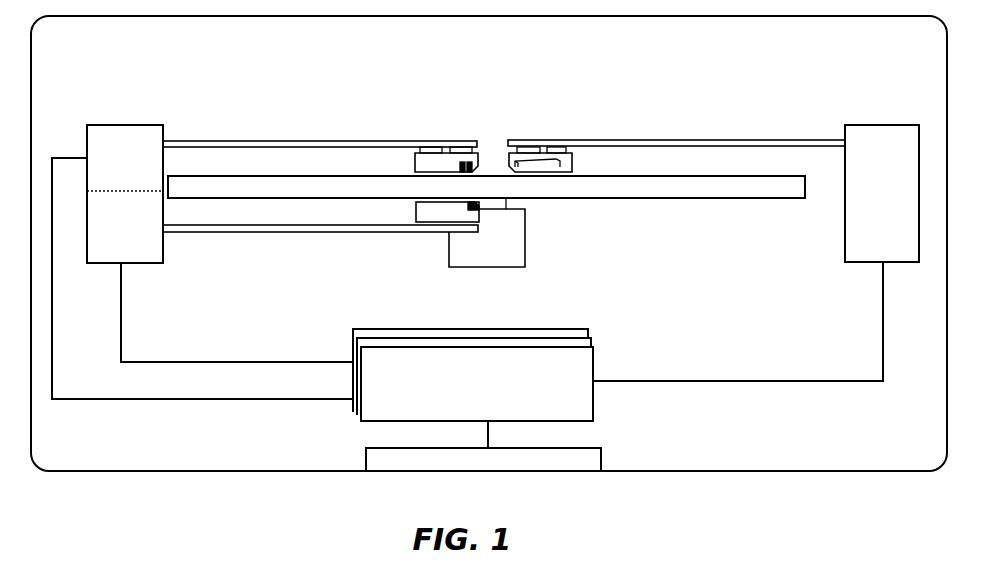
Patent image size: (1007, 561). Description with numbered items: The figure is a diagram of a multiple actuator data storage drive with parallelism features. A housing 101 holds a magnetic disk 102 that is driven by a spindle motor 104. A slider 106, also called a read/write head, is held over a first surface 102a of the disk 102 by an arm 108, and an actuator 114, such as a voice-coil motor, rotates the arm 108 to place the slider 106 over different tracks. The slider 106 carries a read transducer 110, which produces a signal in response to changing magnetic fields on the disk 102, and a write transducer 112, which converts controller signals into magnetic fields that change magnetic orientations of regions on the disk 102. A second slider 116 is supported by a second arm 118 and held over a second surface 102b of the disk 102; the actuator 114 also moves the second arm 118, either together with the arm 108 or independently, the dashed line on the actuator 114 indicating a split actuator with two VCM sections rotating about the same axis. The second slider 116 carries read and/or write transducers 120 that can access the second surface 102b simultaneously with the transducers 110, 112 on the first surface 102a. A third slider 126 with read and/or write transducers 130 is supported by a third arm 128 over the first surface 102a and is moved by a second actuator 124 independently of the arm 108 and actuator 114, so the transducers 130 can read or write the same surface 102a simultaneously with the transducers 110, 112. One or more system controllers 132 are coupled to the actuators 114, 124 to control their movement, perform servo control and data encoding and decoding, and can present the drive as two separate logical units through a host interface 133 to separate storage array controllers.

The housing 101 is at (231, 472).
The magnetic disk 102 is at (765, 187).
The first surface of the disk 102a is at (660, 176).
The second surface of the disk 102b is at (688, 198).
The spindle motor 104 is at (457, 267).
The slider 106 is at (428, 158).
The arm 108 is at (300, 140).
The read transducer 110 is at (474, 158).
The write transducer 112 is at (461, 162).
The actuator 114 is at (116, 125).
The second slider 116 is at (426, 222).
The second arm 118 is at (286, 233).
The read and/or write transducers 120 is at (474, 207).
The second actuator 124 is at (873, 125).
The third slider 126 is at (543, 155).
The third arm 128 is at (688, 140).
The read and/or write transducers 130 is at (572, 160).
The system controllers 132 is at (553, 338).
The host interface 133 is at (556, 472).